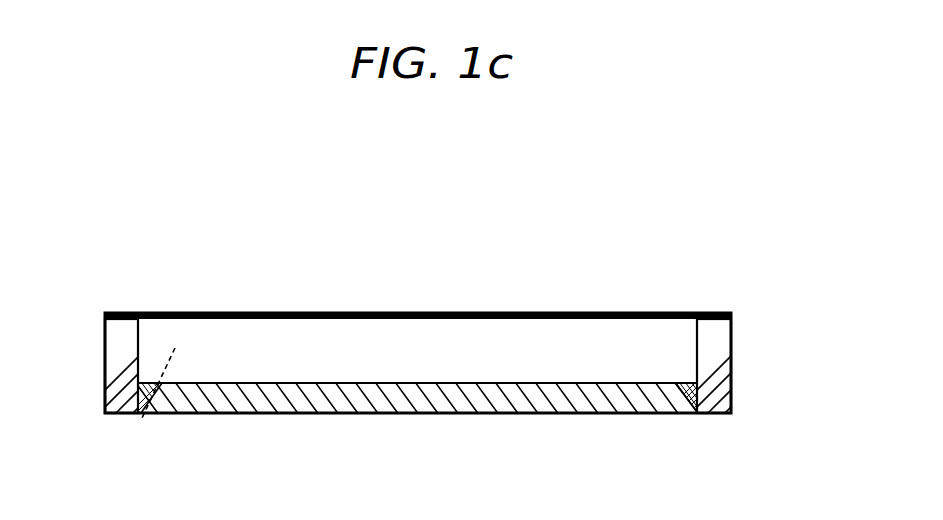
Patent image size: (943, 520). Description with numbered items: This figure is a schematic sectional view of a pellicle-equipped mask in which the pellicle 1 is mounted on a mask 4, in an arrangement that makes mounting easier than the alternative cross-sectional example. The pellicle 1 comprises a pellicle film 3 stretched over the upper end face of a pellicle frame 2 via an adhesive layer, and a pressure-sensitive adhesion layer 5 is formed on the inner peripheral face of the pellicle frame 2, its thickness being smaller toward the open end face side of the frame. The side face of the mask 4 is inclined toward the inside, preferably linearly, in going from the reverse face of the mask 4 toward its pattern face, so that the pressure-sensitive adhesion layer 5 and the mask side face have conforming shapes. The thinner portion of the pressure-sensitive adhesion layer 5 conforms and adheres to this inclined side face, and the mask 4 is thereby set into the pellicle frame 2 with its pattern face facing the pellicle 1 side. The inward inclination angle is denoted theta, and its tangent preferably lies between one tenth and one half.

The pellicle 1 is at (131, 282).
The pellicle frame 2 is at (731, 343).
The pellicle film 3 is at (628, 313).
The mask 4 is at (612, 393).
The pressure-sensitive adhesion layer 5 is at (698, 413).